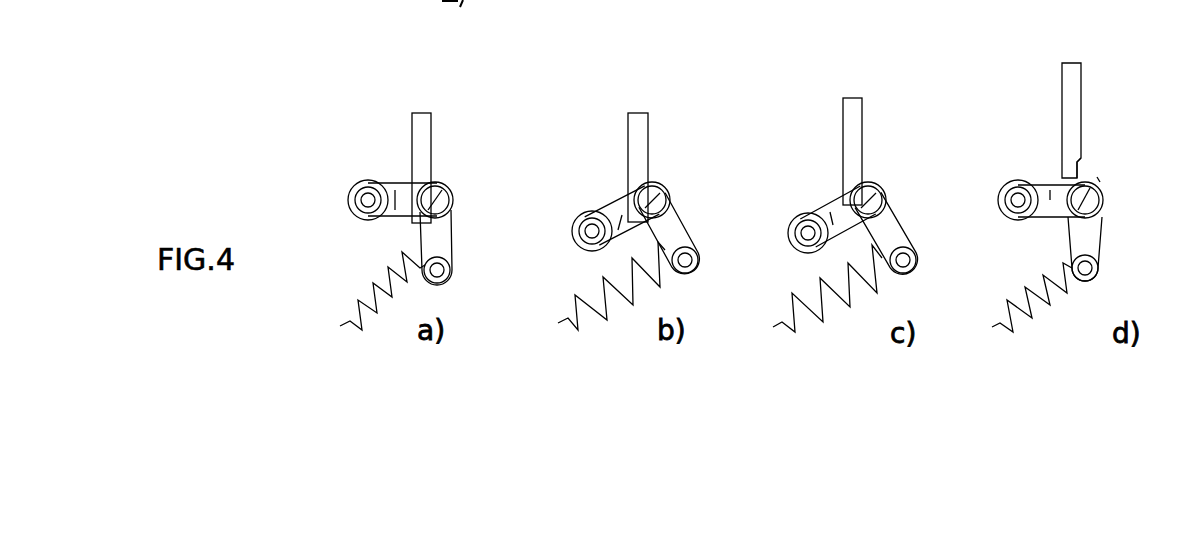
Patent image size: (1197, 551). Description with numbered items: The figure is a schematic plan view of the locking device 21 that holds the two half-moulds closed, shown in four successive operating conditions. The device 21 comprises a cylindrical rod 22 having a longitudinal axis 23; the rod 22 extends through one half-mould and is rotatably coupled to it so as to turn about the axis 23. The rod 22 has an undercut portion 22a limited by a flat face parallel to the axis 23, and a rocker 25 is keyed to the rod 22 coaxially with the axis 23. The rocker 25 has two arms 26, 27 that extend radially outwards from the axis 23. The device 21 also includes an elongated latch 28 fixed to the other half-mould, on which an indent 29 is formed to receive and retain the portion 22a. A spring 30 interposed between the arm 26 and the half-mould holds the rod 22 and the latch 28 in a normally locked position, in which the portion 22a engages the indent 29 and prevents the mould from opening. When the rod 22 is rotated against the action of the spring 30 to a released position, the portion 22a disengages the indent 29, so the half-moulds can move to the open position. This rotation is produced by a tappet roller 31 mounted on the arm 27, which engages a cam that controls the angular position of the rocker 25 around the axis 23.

The locking device 21 is at (329, 161).
The cylindrical rod 22 is at (451, 178).
The undercut portion 22a is at (443, 203).
The longitudinal axis 23 is at (1094, 178).
The rocker 25 is at (389, 176).
The arm 26 is at (447, 243).
The arm 27 is at (395, 212).
The latch 28 is at (421, 122).
The indent 29 is at (1080, 161).
The spring 30 is at (360, 303).
The tappet roller 31 is at (352, 203).